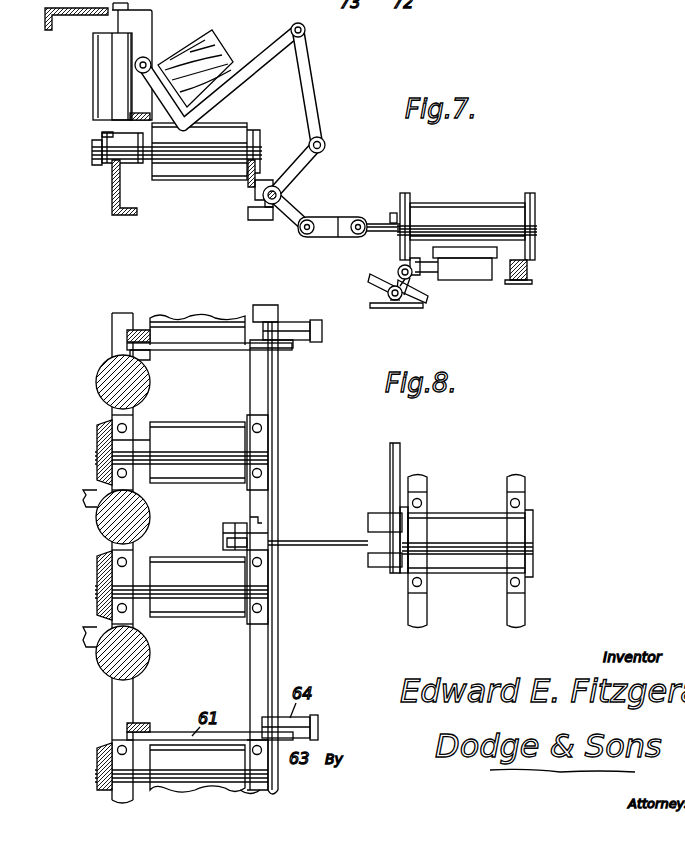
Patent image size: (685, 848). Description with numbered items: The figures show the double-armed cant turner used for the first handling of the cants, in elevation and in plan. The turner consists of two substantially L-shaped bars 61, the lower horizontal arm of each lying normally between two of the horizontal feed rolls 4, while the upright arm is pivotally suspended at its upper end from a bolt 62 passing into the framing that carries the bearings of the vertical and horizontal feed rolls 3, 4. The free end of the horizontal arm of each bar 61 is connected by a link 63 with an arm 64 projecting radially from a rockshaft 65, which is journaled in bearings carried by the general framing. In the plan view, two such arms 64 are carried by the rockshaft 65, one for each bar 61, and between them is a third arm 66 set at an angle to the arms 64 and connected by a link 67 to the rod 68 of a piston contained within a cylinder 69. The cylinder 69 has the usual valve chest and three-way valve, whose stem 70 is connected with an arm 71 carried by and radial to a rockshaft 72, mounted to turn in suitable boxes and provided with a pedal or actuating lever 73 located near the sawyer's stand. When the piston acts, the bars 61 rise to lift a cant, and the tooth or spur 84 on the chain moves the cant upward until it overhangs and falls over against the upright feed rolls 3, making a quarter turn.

In FIG. 7, the vertical rolls 3 is at (106, 74).
In FIG. 8, the vertical rolls 3 is at (150, 380).
In FIG. 7, the horizontal rolls 4 is at (186, 170).
In FIG. 8, the horizontal rolls 4 is at (196, 428).
In FIG. 7, the L-shaped bars 61 is at (240, 80).
In FIG. 8, the L-shaped bars 61 is at (214, 350).
In FIG. 7, the bolt 62 is at (151, 60).
In FIG. 7, the link 63 is at (318, 100).
In FIG. 8, the link 63 is at (300, 349).
In FIG. 7, the arm 64 is at (300, 168).
In FIG. 8, the arm 64 is at (350, 308).
In FIG. 8, the rockshaft 65 is at (279, 640).
In FIG. 7, the third arm 66 is at (298, 208).
In FIG. 8, the third arm 66 is at (238, 524).
In FIG. 7, the link 67 is at (330, 236).
In FIG. 8, the link 67 is at (226, 541).
In FIG. 7, the rod 68 is at (378, 233).
In FIG. 8, the rod 68 is at (325, 546).
In FIG. 7, the cylinder 69 is at (440, 206).
In FIG. 8, the cylinder 69 is at (462, 567).
In FIG. 7, the valve stem 70 is at (410, 294).
In FIG. 7, the arm 71 is at (398, 270).
In FIG. 7, the rockshaft 72 is at (397, 301).
In FIG. 8, the rockshaft 72 is at (399, 464).
In FIG. 7, the pedal 73 is at (375, 290).
In FIG. 8, the tooth or spur 84 is at (98, 440).